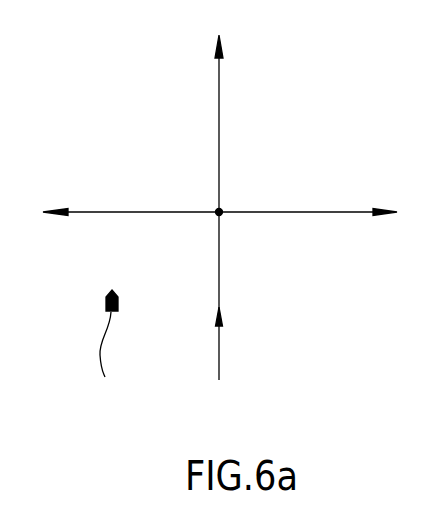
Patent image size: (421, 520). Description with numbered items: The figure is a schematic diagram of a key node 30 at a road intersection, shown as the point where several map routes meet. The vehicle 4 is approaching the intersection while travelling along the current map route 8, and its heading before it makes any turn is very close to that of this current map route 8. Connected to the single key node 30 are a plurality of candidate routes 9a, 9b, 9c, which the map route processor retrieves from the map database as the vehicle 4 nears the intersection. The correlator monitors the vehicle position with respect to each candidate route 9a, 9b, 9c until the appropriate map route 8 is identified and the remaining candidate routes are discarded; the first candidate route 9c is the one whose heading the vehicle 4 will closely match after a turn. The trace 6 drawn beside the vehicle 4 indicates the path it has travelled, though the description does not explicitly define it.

The candidate route 9a is at (83, 212).
The candidate route 9b is at (219, 100).
The first candidate route 9c is at (316, 214).
The current map route 8 is at (219, 352).
The key node 30 is at (221, 214).
The vehicle 4 is at (107, 295).
The vehicle path 6 is at (102, 338).